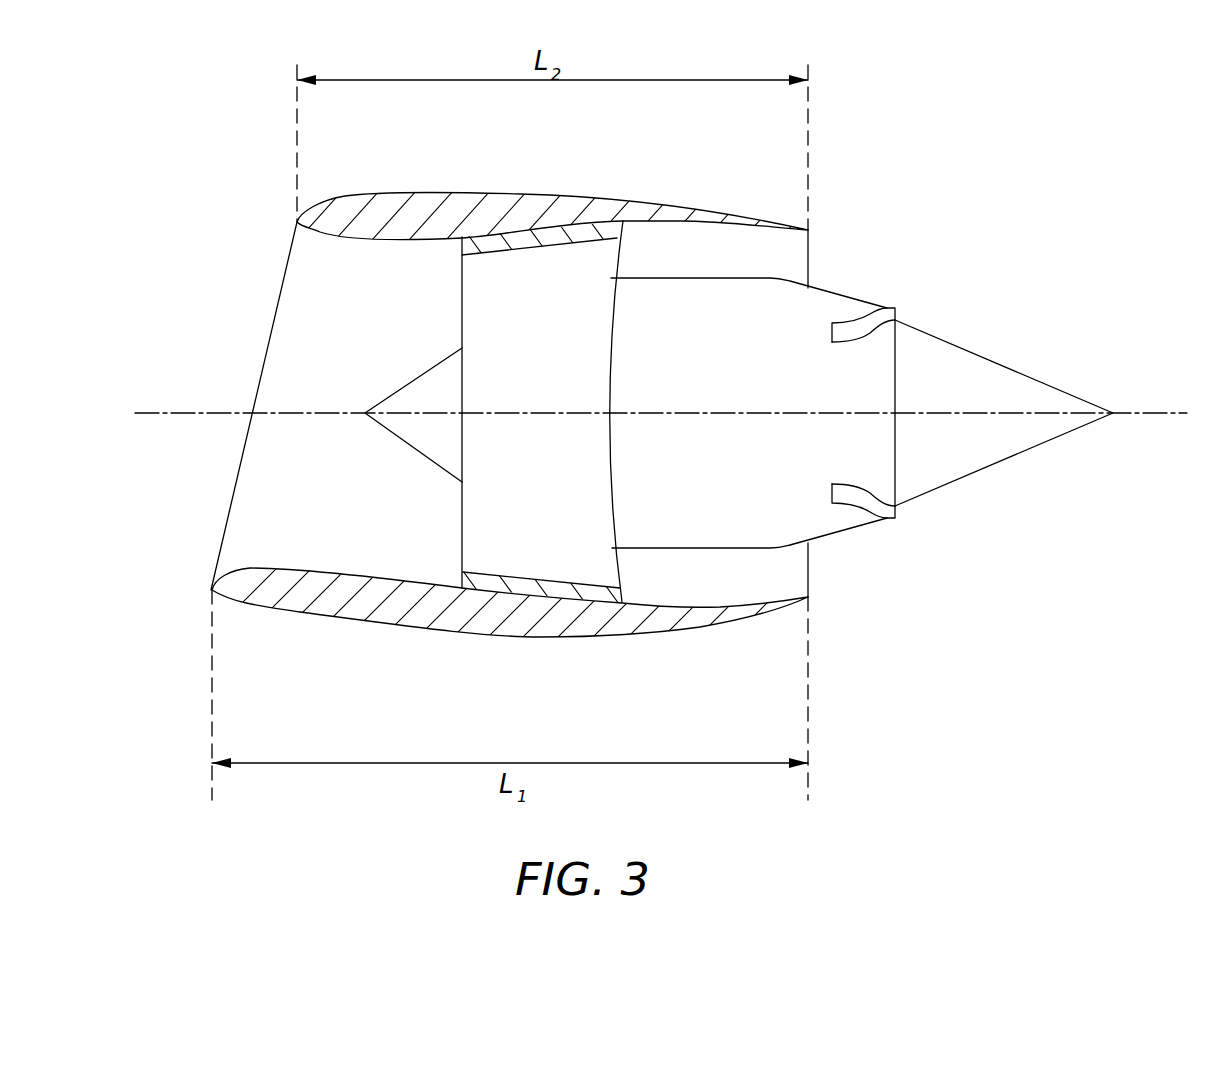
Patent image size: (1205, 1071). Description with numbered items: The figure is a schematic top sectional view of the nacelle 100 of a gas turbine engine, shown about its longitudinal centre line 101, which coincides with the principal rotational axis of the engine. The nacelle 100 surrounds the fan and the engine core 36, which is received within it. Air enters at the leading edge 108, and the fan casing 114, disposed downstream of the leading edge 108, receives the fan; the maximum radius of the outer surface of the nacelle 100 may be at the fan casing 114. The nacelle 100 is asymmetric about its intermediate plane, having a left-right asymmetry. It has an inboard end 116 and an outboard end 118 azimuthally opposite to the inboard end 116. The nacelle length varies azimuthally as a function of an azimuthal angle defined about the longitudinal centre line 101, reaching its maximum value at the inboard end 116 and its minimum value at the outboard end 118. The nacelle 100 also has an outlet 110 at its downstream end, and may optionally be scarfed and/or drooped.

The nacelle 100 is at (1077, 96).
The longitudinal centre line 101 is at (1143, 413).
The engine core 36 is at (800, 298).
The leading edge 108 is at (297, 222).
The nacelle outlet 110 is at (808, 230).
The fan casing 114 is at (490, 242).
The inboard end 116 is at (372, 628).
The outboard end 118 is at (503, 194).